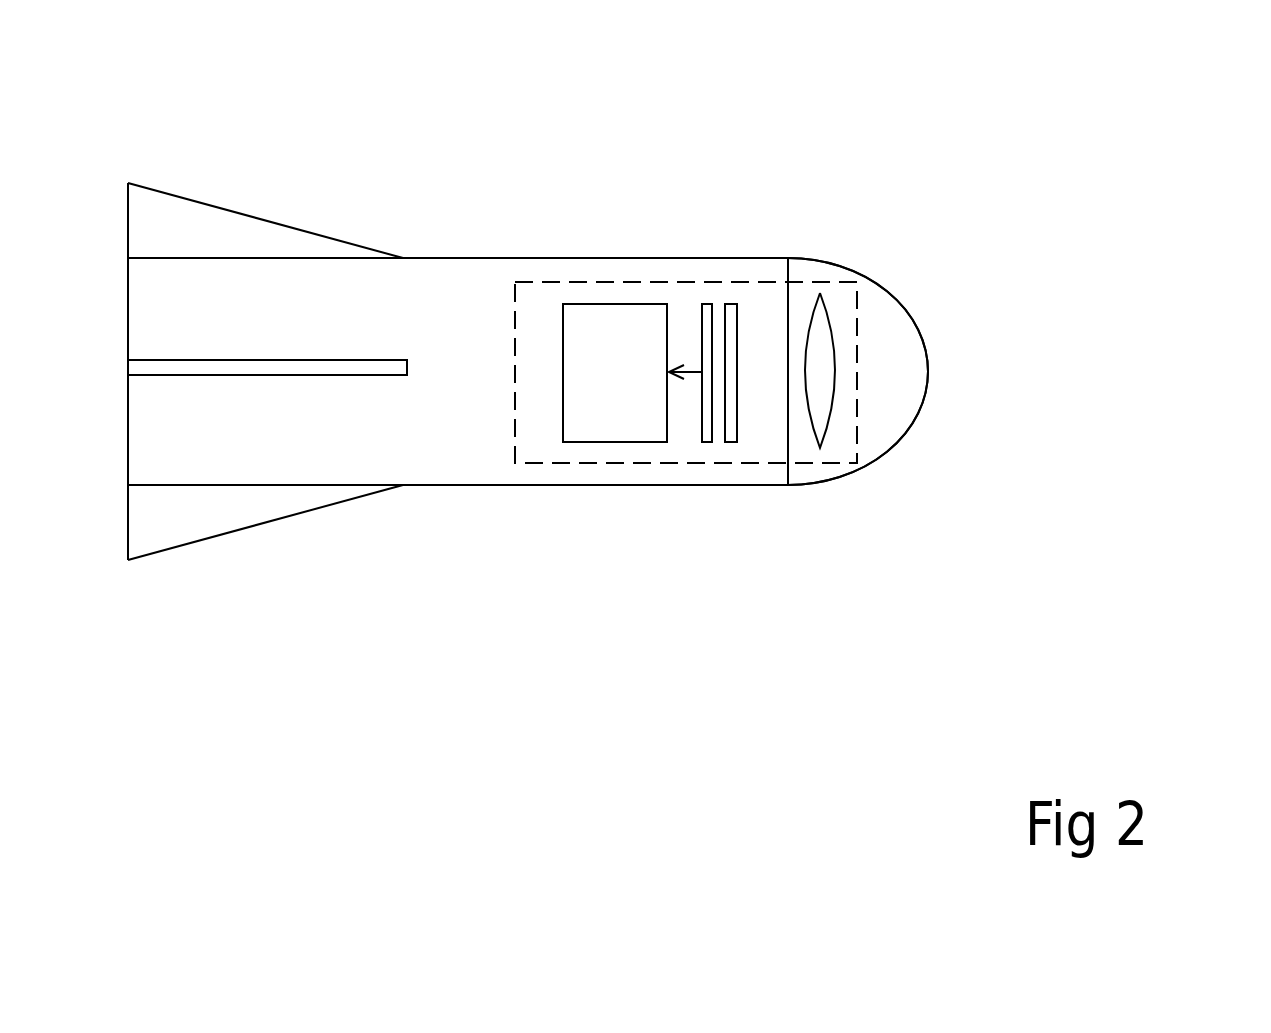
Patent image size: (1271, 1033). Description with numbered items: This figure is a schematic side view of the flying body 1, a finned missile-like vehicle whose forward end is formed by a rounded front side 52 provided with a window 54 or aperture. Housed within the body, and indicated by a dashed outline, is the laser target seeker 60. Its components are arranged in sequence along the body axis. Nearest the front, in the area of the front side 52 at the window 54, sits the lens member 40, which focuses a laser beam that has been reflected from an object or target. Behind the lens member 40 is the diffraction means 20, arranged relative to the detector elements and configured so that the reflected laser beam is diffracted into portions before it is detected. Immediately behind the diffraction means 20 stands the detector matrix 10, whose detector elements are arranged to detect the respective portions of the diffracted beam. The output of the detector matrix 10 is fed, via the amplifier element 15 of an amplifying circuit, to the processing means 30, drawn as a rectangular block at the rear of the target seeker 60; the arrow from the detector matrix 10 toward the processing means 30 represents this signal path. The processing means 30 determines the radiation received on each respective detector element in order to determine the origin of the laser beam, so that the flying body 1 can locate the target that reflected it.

The flying body 1 is at (235, 638).
The detector matrix 10 is at (703, 305).
The amplifier element 15 is at (687, 377).
The diffraction means 20 is at (733, 442).
The processing means 30 is at (507, 175).
The lens member 40 is at (835, 395).
The front side 52 is at (930, 370).
The window 54 is at (903, 348).
The laser target seeker 60 is at (563, 463).